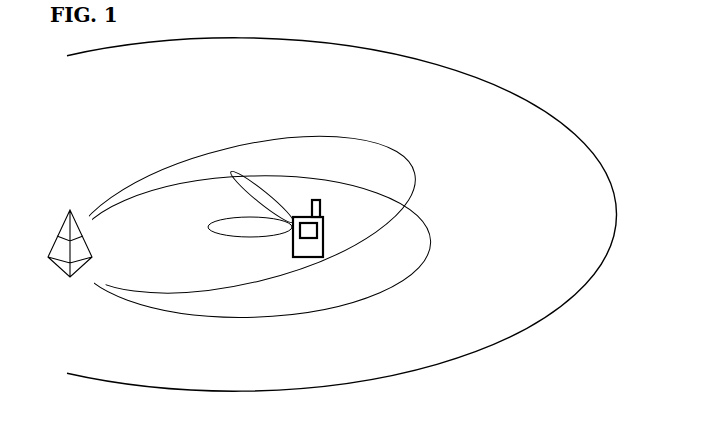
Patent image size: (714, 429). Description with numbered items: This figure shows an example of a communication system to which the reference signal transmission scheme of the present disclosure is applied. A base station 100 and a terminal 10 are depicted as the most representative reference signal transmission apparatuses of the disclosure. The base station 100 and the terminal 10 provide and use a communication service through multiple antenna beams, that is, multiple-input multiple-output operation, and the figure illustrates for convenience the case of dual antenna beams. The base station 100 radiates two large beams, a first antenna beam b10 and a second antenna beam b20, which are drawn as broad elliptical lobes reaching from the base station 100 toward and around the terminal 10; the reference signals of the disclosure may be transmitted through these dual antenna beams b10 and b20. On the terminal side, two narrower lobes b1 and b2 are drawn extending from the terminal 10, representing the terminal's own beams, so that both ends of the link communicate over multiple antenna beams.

The base station 100 is at (70, 208).
The terminal 10 is at (322, 202).
The antenna beam b10 is at (318, 135).
The antenna beam b20 is at (423, 217).
The first terminal beam b1 is at (237, 172).
The second terminal beam b2 is at (272, 236).